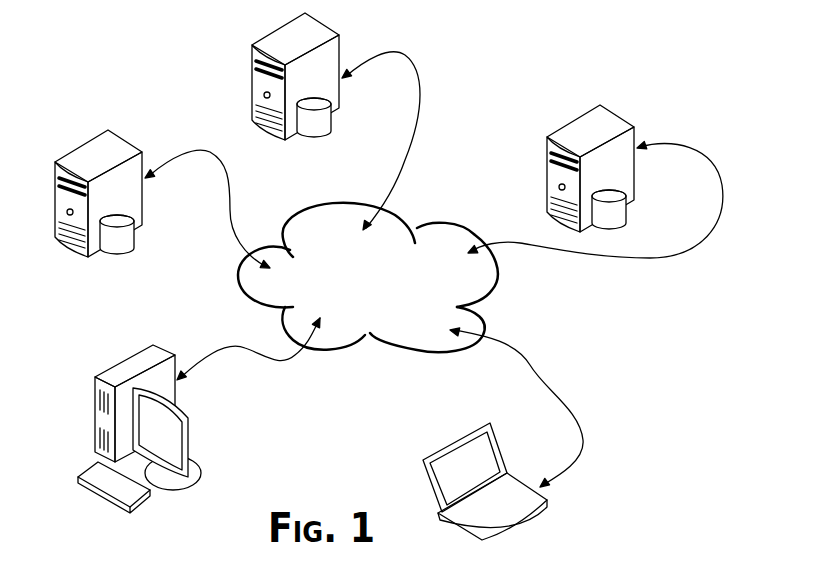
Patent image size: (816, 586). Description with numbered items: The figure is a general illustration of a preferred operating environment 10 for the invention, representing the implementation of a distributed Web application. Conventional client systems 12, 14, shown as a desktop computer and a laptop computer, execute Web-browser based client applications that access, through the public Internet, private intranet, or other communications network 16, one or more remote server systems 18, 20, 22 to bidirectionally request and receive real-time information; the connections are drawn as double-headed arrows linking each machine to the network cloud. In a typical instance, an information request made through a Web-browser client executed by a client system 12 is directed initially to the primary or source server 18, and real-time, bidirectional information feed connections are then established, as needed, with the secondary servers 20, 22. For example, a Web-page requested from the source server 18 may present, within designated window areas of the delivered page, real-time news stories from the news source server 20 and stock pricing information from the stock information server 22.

The operating environment 10 is at (612, 330).
The client system 12 is at (192, 430).
The client system 14 is at (463, 442).
The communications network 16 is at (386, 313).
The primary or source server 18 is at (90, 137).
The news source server 20 is at (246, 87).
The stock information server 22 is at (565, 127).